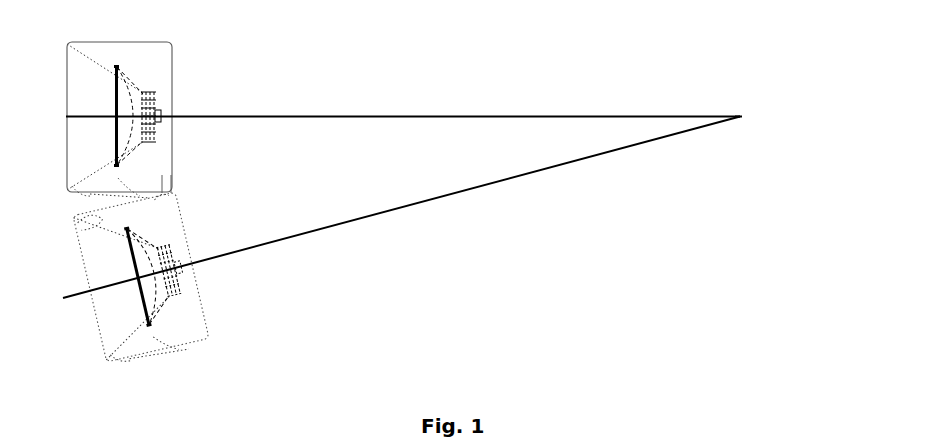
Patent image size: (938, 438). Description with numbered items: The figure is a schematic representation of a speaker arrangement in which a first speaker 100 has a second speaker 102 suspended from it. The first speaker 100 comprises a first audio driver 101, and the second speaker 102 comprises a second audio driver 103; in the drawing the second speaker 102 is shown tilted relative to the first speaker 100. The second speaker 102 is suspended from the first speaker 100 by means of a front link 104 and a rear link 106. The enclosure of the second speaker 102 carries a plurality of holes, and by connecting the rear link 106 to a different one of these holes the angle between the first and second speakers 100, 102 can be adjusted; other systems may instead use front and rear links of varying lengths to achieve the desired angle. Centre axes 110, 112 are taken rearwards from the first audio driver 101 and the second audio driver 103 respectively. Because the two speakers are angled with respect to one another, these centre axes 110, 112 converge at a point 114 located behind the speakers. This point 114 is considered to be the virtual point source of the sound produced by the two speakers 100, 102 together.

The first speaker 100 is at (166, 192).
The first audio driver 101 is at (150, 106).
The second speaker 102 is at (207, 328).
The second audio driver 103 is at (143, 213).
The front link 104 is at (83, 198).
The rear link 106 is at (155, 178).
The centre axis 110 is at (403, 117).
The centre axis 112 is at (410, 205).
The point 114 is at (740, 116).